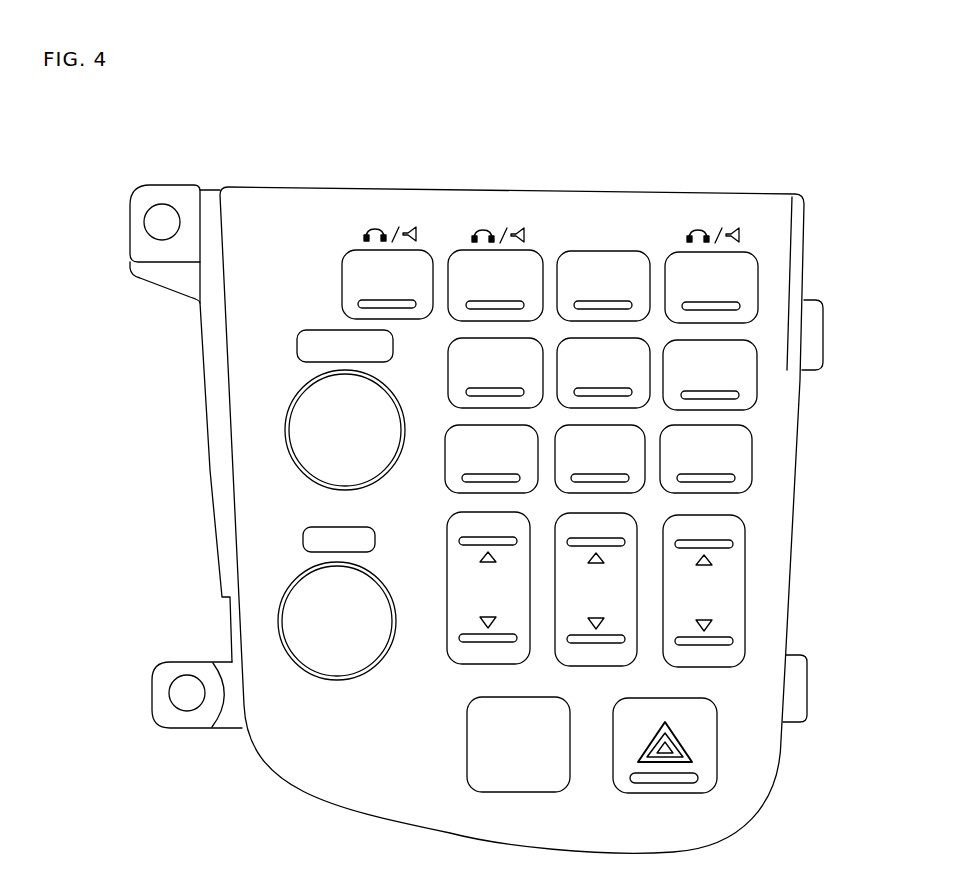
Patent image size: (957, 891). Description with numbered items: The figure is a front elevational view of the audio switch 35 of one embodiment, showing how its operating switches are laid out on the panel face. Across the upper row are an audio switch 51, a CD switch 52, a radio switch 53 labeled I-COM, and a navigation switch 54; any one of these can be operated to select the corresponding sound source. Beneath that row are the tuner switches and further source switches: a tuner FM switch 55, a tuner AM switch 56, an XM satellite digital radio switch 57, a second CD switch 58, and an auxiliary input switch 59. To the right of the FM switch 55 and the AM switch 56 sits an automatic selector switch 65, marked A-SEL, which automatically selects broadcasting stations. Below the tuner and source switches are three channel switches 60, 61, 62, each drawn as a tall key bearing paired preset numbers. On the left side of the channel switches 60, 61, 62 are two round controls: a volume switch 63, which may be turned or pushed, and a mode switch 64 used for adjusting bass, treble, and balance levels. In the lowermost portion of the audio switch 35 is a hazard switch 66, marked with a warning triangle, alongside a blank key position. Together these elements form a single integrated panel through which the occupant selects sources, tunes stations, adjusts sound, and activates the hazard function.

The audio switch 35 is at (289, 150).
The audio switch (AUDIO) 51 is at (350, 262).
The CD switch (CD) 52 is at (465, 262).
The radio switch (I-COM) 53 is at (592, 262).
The navigation switch (NAVI) 54 is at (747, 263).
The tuner FM switch (FM) 55 is at (535, 352).
The tuner AM switch (AM) 56 is at (643, 352).
The XM satellite digital radio switch (XM) 57 is at (632, 438).
The CD switch (CD) 58 is at (458, 440).
The auxiliary input switch (AUX) 59 is at (740, 448).
The channel switch 60 is at (452, 534).
The channel switch 61 is at (575, 523).
The channel switch 62 is at (737, 553).
The volume switch (VOLUME) 63 is at (305, 437).
The mode switch (MODE) 64 is at (308, 596).
The automatic selector switch (A-SEL) 65 is at (742, 352).
The hazard switch 66 is at (705, 745).